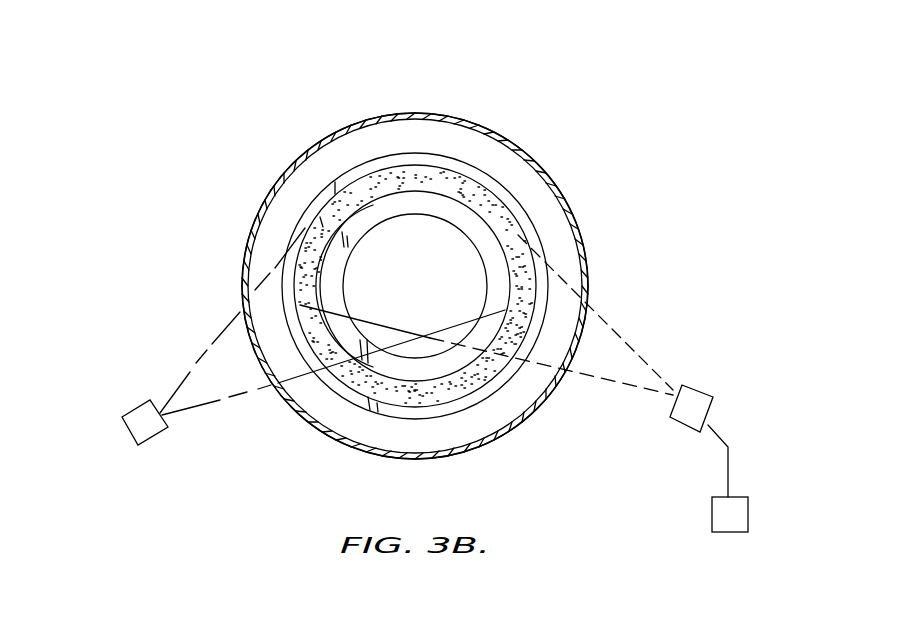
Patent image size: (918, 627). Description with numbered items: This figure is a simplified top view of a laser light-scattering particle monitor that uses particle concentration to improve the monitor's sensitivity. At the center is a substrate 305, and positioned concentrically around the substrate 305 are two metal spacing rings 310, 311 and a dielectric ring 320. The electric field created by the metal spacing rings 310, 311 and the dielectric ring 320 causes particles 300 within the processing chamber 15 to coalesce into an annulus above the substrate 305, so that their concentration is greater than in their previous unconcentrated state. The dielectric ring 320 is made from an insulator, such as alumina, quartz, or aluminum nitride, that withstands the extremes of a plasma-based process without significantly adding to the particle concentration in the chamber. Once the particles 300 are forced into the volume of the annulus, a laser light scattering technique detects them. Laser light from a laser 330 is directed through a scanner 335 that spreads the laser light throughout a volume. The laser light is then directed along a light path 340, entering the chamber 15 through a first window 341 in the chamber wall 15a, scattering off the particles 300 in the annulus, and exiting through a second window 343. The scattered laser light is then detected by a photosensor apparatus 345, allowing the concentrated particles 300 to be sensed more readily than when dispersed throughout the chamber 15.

The processing chamber 15 is at (178, 191).
The chamber wall 15a is at (506, 135).
The particles 300 is at (542, 247).
The substrate 305 is at (435, 303).
The metal spacing ring 310 is at (493, 243).
The metal spacing ring 311 is at (543, 280).
The dielectric ring 320 is at (535, 265).
The laser 330 is at (750, 506).
The scanner 335 is at (710, 385).
The light path 340 is at (211, 350).
The first window 341 is at (582, 348).
The second window 343 is at (241, 316).
The photosensor apparatus 345 is at (135, 405).